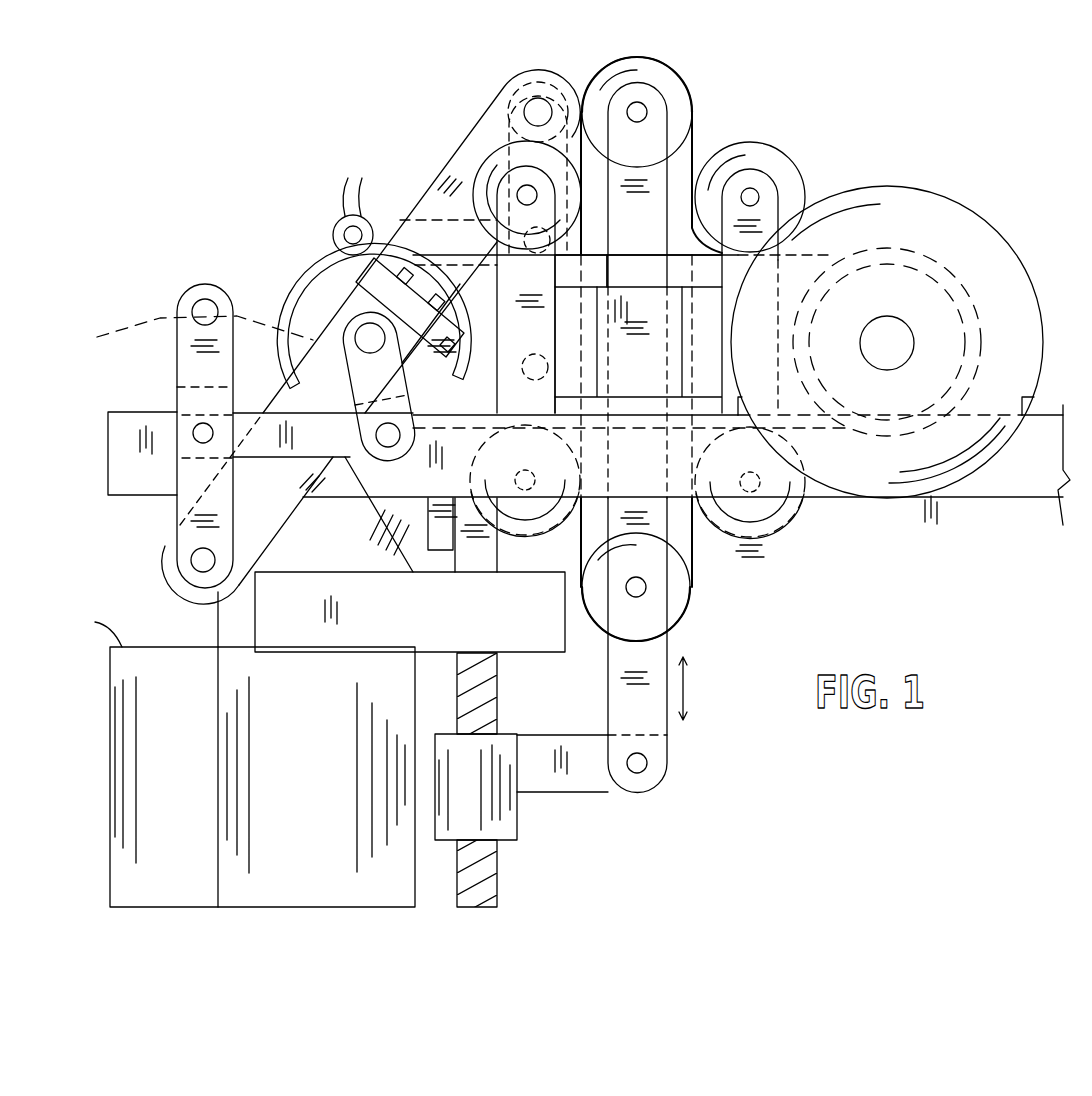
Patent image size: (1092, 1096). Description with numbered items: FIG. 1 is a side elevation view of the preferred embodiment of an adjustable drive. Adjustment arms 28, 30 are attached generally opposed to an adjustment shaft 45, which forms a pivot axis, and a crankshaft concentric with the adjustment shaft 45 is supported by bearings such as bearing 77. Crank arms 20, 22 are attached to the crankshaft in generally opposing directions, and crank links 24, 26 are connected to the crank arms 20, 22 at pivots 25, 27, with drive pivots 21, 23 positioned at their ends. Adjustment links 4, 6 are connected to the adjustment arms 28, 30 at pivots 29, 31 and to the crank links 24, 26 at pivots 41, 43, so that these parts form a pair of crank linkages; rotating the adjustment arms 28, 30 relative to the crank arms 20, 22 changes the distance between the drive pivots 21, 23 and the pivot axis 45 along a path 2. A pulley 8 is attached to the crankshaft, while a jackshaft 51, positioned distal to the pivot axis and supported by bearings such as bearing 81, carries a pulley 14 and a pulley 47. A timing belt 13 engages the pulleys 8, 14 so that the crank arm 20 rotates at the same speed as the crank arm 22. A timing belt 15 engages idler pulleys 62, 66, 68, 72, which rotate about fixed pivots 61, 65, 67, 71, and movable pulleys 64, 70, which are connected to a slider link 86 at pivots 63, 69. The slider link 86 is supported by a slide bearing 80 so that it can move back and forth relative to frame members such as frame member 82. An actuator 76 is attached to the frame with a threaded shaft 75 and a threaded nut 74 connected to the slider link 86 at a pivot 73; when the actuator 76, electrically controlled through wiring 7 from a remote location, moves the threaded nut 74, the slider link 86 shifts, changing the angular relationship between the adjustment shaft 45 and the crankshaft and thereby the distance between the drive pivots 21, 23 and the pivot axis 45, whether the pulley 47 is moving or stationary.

The path 2 is at (172, 322).
The adjustment link 4 is at (396, 508).
The adjustment link 6 is at (390, 224).
The wiring 7 is at (105, 620).
The pulley 8 is at (290, 294).
The timing belt 13 is at (720, 253).
The pulley 14 is at (925, 250).
The timing belt 15 is at (696, 140).
The crank arm 20 is at (164, 547).
The drive pivot 21 is at (205, 299).
The crank arm 22 is at (488, 110).
The drive pivot 23 is at (521, 367).
The crank link 24 is at (177, 352).
The pivot 25 is at (191, 558).
The crank link 26 is at (566, 272).
The pivot 27 is at (538, 98).
The adjustment arm 28 is at (365, 418).
The pivot 29 is at (380, 432).
The adjustment arm 30 is at (345, 222).
The pivot 31 is at (350, 205).
The pivot 41 is at (196, 428).
The pivot 43 is at (551, 243).
The adjustment shaft 45 is at (363, 325).
The pulley 47 is at (872, 184).
The jackshaft 51 is at (887, 370).
The fixed pivot 61 is at (517, 190).
The idler pulley 62 is at (490, 155).
The pivot 63 is at (648, 108).
The movable pulley 64 is at (668, 70).
The fixed pivot 65 is at (758, 190).
The idler pulley 66 is at (800, 178).
The fixed pivot 67 is at (762, 486).
The idler pulley 68 is at (792, 525).
The pivot 69 is at (646, 590).
The movable pulley 70 is at (680, 578).
The fixed pivot 71 is at (525, 490).
The idler pulley 72 is at (566, 524).
The pivot 73 is at (645, 770).
The threaded nut 74 is at (519, 820).
The threaded shaft 75 is at (498, 868).
The actuator 76 is at (110, 739).
The bearing 77 is at (452, 330).
The slide bearing 80 is at (645, 287).
The bearing 81 is at (1025, 400).
The frame member 82 is at (955, 500).
The slider link 86 is at (607, 690).